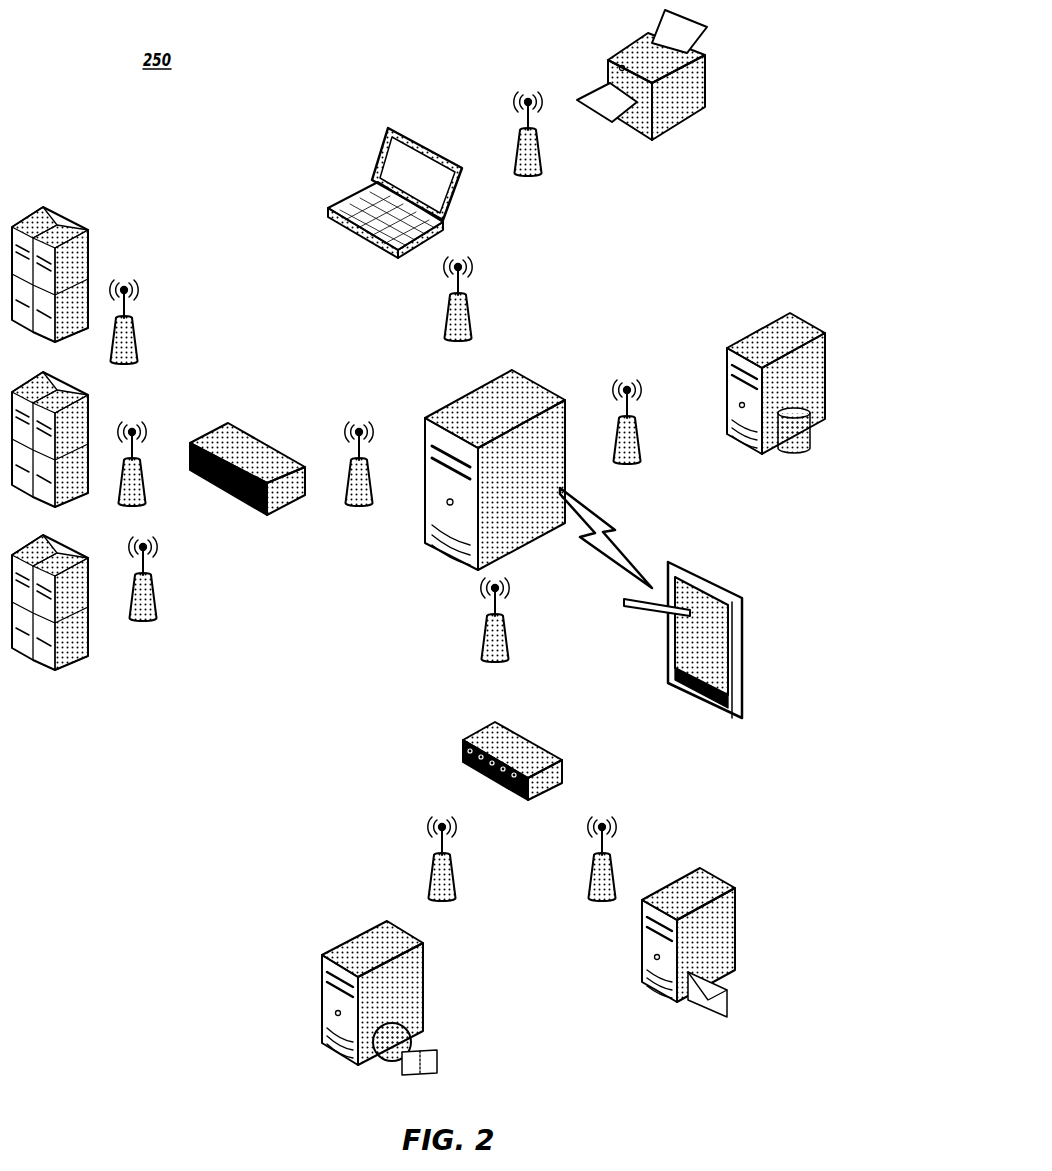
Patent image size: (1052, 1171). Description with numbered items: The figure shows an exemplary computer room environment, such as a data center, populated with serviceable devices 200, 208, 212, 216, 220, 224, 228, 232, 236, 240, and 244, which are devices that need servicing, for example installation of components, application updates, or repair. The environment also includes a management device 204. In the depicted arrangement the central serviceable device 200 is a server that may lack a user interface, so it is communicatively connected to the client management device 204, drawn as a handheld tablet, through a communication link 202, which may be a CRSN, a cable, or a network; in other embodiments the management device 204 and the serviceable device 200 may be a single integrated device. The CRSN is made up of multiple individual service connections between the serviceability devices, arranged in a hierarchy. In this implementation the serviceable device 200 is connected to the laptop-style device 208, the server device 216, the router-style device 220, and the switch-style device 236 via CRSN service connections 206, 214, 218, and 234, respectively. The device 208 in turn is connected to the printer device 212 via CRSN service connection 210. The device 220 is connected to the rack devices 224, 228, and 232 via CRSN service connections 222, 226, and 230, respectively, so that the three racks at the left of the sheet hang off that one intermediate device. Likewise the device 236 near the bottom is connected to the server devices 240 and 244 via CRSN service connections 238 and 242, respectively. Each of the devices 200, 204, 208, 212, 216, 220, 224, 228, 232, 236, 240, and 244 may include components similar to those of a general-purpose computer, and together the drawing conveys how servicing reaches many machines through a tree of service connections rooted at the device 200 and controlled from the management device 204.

The serviceable device 200 is at (428, 555).
The communication link 202 is at (615, 532).
The management device 204 is at (668, 688).
The CRSN service connection 206 is at (445, 327).
The serviceable device 208 is at (378, 155).
The CRSN service connection 210 is at (537, 172).
The serviceable device 212 is at (690, 108).
The CRSN service connection 214 is at (612, 388).
The serviceable device 216 is at (763, 338).
The CRSN service connection 218 is at (362, 423).
The serviceable device 220 is at (280, 498).
The CRSN service connection 222 is at (138, 343).
The serviceable device 224 is at (73, 232).
The CRSN service connection 226 is at (145, 497).
The serviceable device 228 is at (78, 421).
The CRSN service connection 230 is at (155, 610).
The serviceable device 232 is at (75, 650).
The CRSN service connection 234 is at (482, 653).
The serviceable device 236 is at (462, 750).
The CRSN service connection 238 is at (453, 875).
The serviceable device 240 is at (345, 948).
The CRSN service connection 242 is at (618, 880).
The serviceable device 244 is at (705, 882).